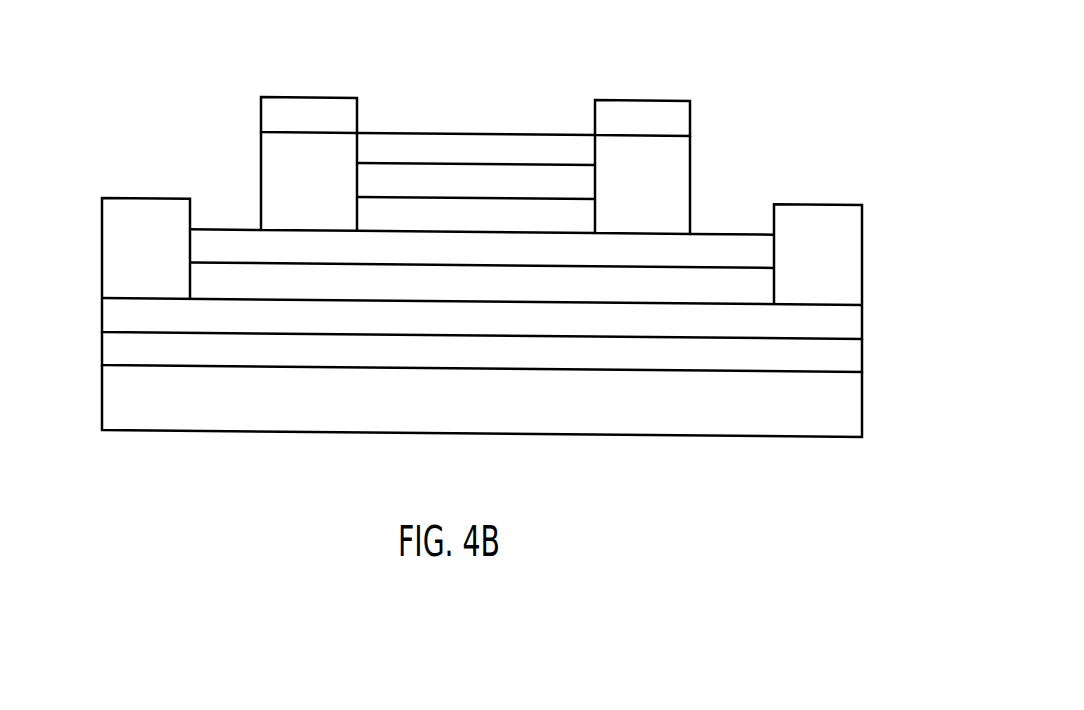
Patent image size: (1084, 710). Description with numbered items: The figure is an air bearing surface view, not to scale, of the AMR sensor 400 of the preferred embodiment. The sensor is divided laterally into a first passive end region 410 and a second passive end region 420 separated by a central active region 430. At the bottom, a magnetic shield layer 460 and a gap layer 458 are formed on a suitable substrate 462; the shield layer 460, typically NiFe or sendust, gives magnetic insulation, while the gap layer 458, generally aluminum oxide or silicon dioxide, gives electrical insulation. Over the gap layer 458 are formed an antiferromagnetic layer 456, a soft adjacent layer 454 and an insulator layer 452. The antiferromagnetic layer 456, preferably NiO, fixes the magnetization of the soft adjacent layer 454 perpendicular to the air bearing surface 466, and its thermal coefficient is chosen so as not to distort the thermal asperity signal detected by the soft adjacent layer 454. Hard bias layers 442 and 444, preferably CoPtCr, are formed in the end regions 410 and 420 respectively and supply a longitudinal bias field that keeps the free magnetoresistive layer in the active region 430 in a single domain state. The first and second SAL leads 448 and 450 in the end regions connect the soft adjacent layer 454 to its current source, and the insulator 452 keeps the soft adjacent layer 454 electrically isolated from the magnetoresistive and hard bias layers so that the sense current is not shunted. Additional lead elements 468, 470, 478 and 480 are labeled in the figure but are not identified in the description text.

The AMR sensor 400 is at (251, 493).
The passive end region 410 is at (357, 62).
The passive end region 420 is at (862, 65).
The central active region 430 is at (588, 63).
The hard bias layer 442 is at (283, 157).
The hard bias layer 444 is at (660, 157).
The first SAL lead 448 is at (373, 147).
The second SAL lead 450 is at (555, 190).
The insulator layer 452 is at (372, 215).
The soft adjacent layer 454 is at (698, 252).
The antiferromagnetic layer 456 is at (728, 285).
The gap layer 458 is at (832, 327).
The magnetic shield layer 460 is at (835, 360).
The substrate 462 is at (835, 410).
The air bearing surface 466 is at (573, 147).
The first asperity compensation layer lead 468 is at (129, 208).
The second asperity compensation layer lead 470 is at (838, 218).
The first spin valve lead 478 is at (261, 127).
The second spin valve lead 480 is at (685, 128).